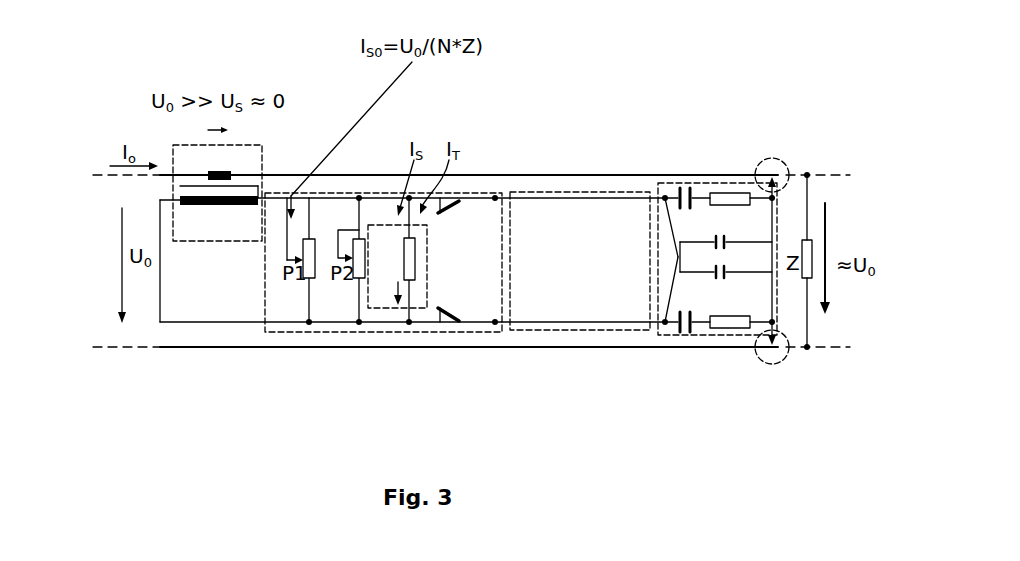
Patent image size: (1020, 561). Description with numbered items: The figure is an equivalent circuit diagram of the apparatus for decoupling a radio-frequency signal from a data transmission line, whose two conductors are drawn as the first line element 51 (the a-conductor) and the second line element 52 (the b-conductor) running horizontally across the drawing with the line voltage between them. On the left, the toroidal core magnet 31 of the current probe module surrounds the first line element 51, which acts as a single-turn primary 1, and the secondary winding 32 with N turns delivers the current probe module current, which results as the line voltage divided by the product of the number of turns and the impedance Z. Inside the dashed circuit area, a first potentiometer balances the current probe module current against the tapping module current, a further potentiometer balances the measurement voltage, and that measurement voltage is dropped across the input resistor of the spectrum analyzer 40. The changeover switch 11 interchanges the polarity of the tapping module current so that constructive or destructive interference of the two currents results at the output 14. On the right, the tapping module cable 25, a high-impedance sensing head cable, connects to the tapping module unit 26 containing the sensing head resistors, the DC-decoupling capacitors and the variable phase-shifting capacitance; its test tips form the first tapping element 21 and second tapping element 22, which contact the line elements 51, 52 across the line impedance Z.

The primary conductor turn 1 is at (219, 162).
The changeover switch 11 is at (494, 321).
The output 14 is at (436, 197).
The first tapping element 21 is at (768, 160).
The second tapping element 22 is at (758, 358).
The tapping module cable 25 is at (555, 331).
The tapping module unit 26 is at (708, 183).
The toroidal core magnet 31 is at (224, 169).
The secondary winding 32 is at (265, 193).
The spectrum analyzer 40 is at (387, 309).
The first line element 51 is at (468, 190).
The second line element 52 is at (471, 362).